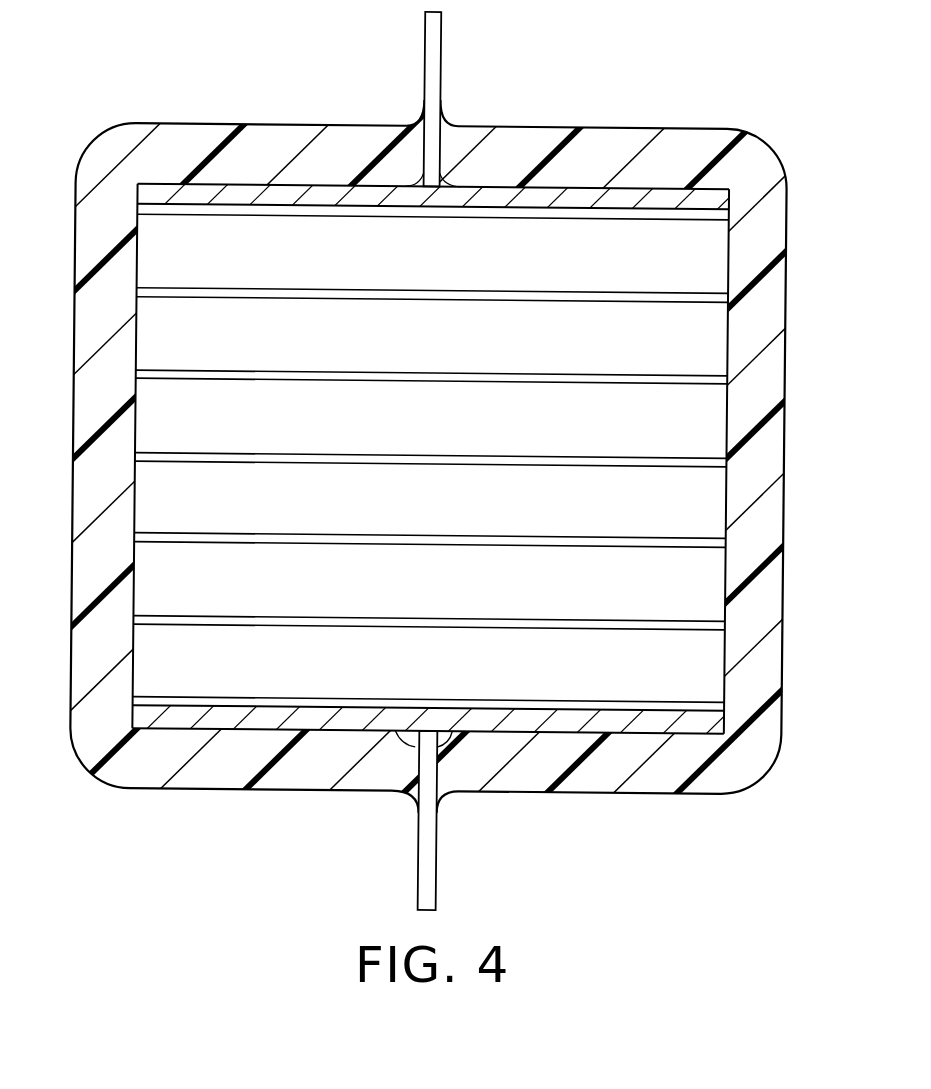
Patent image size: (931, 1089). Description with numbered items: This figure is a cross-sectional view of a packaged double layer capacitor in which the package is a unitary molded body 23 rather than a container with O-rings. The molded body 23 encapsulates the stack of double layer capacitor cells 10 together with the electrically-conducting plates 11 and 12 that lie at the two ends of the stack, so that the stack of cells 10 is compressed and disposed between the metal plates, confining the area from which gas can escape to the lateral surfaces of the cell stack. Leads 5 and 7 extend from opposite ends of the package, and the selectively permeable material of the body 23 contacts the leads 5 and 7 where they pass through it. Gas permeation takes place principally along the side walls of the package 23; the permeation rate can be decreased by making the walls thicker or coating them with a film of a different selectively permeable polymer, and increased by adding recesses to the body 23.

The lead 5 is at (429, 58).
The lead 7 is at (431, 861).
The stack of double layer capacitor cells 10 is at (145, 251).
The electrically-conducting plate 11 is at (692, 728).
The electrically-conducting plate 12 is at (707, 194).
The unitary molded body 23 is at (761, 407).